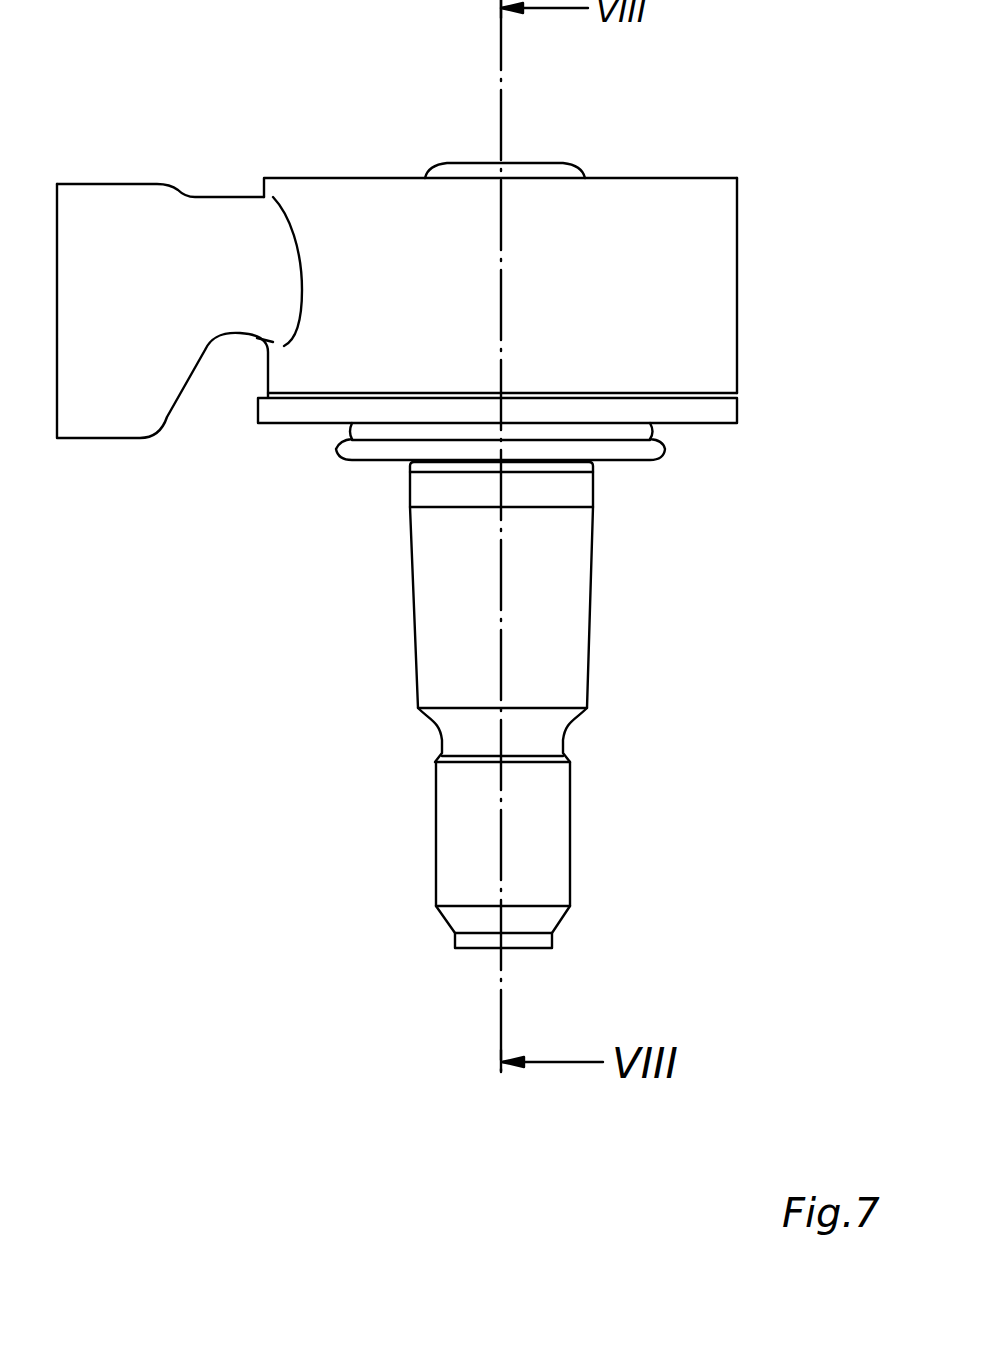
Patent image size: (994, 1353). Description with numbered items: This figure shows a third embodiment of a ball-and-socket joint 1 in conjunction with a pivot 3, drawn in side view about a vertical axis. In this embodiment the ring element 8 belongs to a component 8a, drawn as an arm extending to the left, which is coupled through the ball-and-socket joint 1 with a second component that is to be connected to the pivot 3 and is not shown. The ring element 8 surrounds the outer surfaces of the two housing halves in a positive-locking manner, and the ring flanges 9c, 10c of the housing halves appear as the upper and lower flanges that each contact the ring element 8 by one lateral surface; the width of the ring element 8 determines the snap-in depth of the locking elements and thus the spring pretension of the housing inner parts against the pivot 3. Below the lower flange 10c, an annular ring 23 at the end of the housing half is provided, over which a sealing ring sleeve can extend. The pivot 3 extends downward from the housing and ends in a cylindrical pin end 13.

The ball-and-socket joint 1 is at (393, 947).
The pivot 3 is at (450, 638).
The ring element 8 is at (713, 287).
The component 8a is at (107, 425).
The ring flange 9c is at (735, 178).
The ring flange 10c is at (728, 412).
The cylindrical pin end 13 is at (503, 820).
The annular ring 23 is at (662, 453).